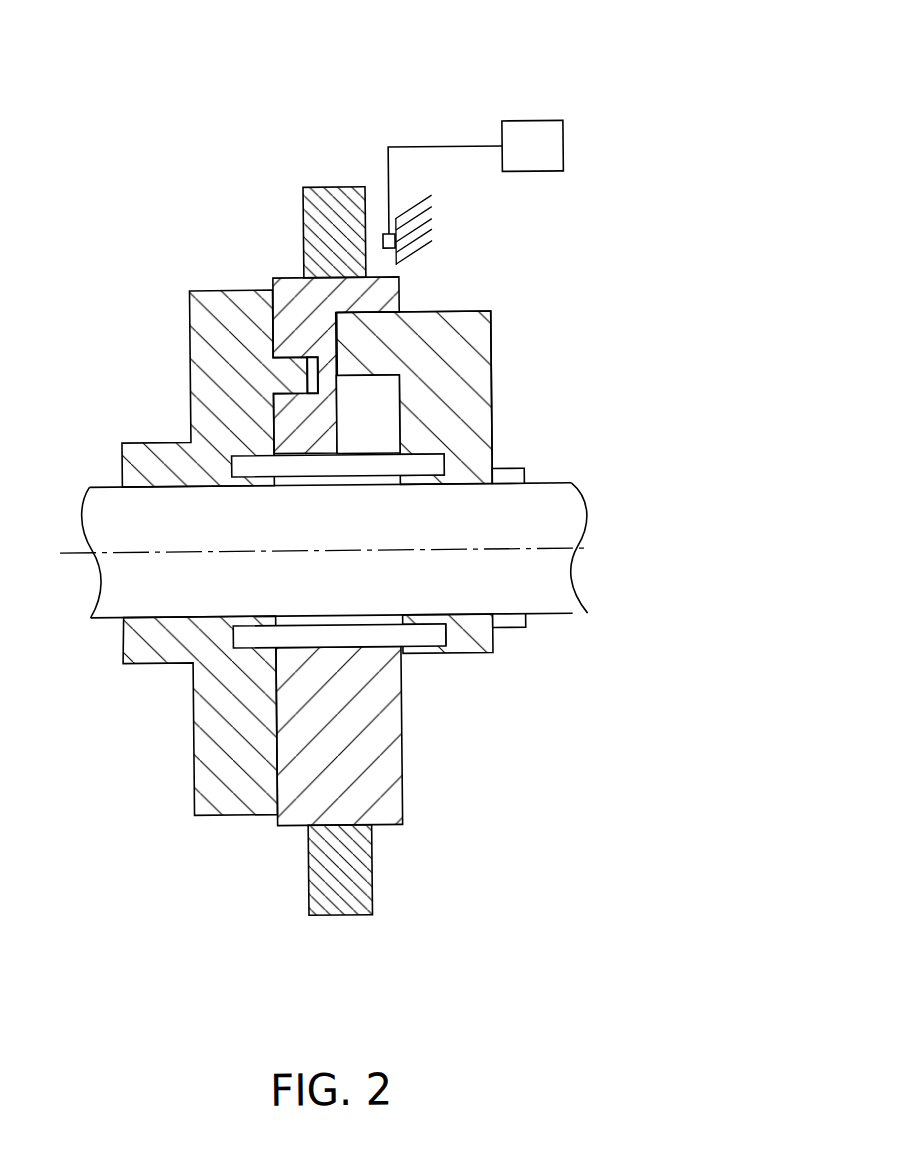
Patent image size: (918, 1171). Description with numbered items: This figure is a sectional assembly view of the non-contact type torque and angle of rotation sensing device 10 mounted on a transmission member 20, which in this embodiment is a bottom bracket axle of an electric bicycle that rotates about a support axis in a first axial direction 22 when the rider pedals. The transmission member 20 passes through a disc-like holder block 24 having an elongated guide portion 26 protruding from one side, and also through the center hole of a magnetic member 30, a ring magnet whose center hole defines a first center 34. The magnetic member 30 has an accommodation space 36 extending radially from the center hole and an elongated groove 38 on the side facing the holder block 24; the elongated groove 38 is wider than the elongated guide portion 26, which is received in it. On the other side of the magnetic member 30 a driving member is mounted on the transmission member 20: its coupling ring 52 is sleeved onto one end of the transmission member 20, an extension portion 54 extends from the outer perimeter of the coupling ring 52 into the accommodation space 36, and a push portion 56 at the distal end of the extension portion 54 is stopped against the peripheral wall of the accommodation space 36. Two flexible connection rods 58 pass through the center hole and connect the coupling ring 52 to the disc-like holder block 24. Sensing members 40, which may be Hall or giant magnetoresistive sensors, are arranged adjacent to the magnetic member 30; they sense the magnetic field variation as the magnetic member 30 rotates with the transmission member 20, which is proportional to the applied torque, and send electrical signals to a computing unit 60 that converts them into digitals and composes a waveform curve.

The non-contact type torque and angle of rotation sensing device 10 is at (79, 126).
The transmission member 20 is at (559, 619).
The first axial direction 22 is at (72, 550).
The disc-like holder block 24 is at (214, 814).
The elongated guide portion 26 is at (307, 370).
The magnetic member 30 is at (328, 185).
The first center 34 is at (339, 650).
The accommodation space 36 is at (368, 422).
The elongated groove 38 is at (315, 357).
The sensing members 40 is at (384, 233).
The coupling ring 52 is at (511, 470).
The extension portion 54 is at (494, 384).
The push portion 56 is at (364, 343).
The flexible connection rods 58 is at (438, 454).
The computing unit 60 is at (534, 122).